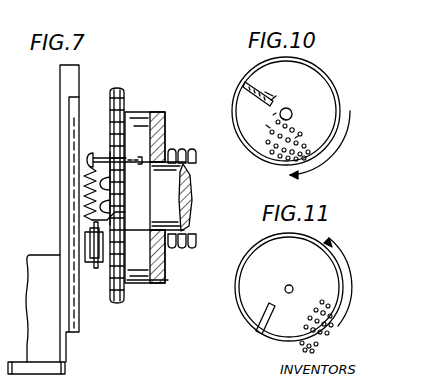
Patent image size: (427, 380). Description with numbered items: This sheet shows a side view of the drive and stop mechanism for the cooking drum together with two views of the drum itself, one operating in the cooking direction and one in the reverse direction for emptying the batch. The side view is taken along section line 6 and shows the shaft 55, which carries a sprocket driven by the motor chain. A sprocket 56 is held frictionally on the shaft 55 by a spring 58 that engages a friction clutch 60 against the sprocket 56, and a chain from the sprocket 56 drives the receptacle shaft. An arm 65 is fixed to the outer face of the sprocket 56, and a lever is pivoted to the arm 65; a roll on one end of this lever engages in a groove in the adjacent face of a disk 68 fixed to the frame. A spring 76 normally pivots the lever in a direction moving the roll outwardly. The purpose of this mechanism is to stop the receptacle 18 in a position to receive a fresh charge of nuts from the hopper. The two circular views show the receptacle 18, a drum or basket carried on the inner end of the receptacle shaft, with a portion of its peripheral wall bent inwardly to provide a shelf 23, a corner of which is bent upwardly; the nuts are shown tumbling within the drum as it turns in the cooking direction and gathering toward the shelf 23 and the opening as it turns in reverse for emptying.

In FIG. 7, the section line 6-6 / pellet 6 is at (110, 88).
In FIG. 11, the section line 6-6 / pellet 6 is at (288, 282).
In FIG. 7, the disk 68 is at (60, 80).
In FIG. 7, the sprocket 56 is at (126, 90).
In FIG. 7, the friction clutch 60 is at (163, 112).
In FIG. 7, the spring 58 is at (180, 151).
In FIG. 7, the shaft 55 is at (194, 206).
In FIG. 7, the spring 76 is at (87, 205).
In FIG. 7, the arm 65 is at (86, 223).
In FIG. 10, the receptacle 18 is at (334, 83).
In FIG. 11, the receptacle 18 is at (237, 312).
In FIG. 10, the shelf 23 is at (262, 99).
In FIG. 11, the shelf 23 is at (270, 306).